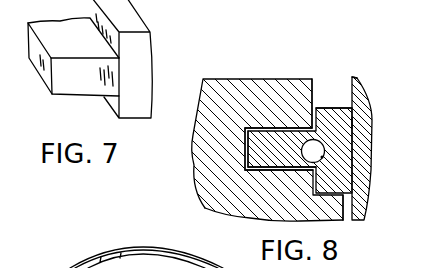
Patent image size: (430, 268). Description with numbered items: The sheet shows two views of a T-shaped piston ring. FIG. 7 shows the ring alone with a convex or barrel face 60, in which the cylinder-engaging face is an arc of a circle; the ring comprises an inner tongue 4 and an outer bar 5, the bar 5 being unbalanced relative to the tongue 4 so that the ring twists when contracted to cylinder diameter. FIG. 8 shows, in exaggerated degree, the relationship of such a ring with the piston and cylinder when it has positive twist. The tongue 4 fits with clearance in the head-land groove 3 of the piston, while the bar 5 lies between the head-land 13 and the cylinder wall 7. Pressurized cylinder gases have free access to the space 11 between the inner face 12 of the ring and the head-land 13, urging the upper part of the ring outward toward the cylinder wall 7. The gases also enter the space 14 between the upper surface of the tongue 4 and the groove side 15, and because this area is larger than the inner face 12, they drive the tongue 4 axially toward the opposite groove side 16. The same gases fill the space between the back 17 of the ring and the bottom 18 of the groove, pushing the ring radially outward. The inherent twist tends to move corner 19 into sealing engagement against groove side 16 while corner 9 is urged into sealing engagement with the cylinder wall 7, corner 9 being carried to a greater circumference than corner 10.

In FIG. 7, the barrel face 60 is at (115, 59).
In FIG. 7, the tongue 4 is at (89, 88).
In FIG. 8, the tongue 4 is at (291, 153).
In FIG. 7, the bar 5 is at (143, 84).
In FIG. 8, the bar 5 is at (340, 148).
In FIG. 8, the head-land groove 3 is at (247, 130).
In FIG. 8, the side of ring groove 15 is at (264, 128).
In FIG. 8, the space 14 is at (281, 130).
In FIG. 8, the head-land 13 is at (309, 118).
In FIG. 8, the space 11 is at (316, 110).
In FIG. 8, the corner 10 is at (351, 112).
In FIG. 8, the inner face 12 is at (352, 123).
In FIG. 8, the cylinder wall 7 is at (362, 178).
In FIG. 8, the corner 9 is at (357, 202).
In FIG. 8, the side of groove 16 is at (249, 213).
In FIG. 8, the back of ring 17 is at (247, 169).
In FIG. 8, the bottom of groove 18 is at (245, 137).
In FIG. 8, the corner 19 is at (250, 153).